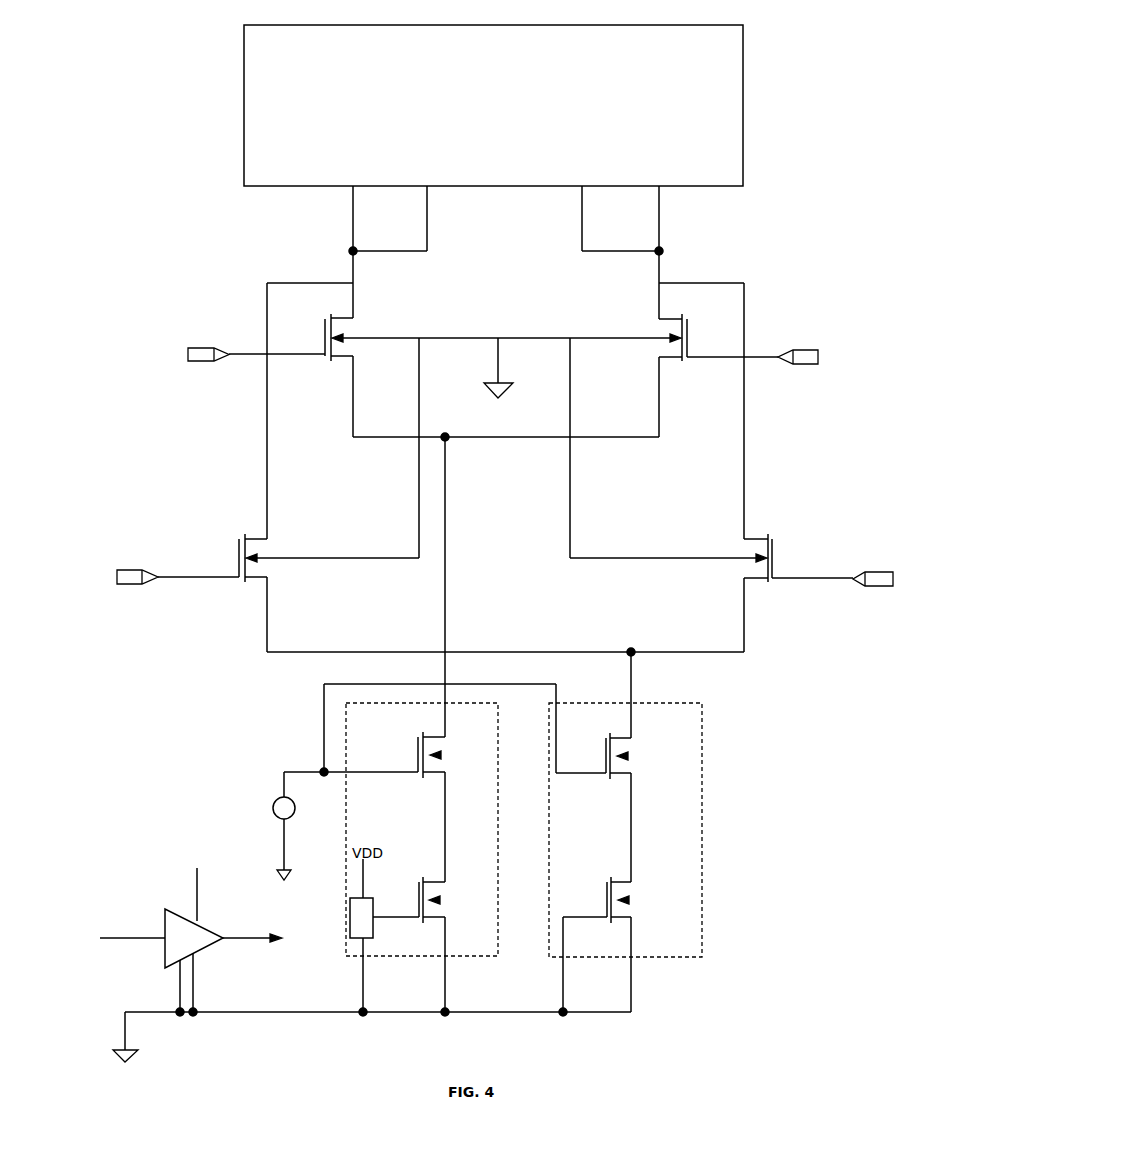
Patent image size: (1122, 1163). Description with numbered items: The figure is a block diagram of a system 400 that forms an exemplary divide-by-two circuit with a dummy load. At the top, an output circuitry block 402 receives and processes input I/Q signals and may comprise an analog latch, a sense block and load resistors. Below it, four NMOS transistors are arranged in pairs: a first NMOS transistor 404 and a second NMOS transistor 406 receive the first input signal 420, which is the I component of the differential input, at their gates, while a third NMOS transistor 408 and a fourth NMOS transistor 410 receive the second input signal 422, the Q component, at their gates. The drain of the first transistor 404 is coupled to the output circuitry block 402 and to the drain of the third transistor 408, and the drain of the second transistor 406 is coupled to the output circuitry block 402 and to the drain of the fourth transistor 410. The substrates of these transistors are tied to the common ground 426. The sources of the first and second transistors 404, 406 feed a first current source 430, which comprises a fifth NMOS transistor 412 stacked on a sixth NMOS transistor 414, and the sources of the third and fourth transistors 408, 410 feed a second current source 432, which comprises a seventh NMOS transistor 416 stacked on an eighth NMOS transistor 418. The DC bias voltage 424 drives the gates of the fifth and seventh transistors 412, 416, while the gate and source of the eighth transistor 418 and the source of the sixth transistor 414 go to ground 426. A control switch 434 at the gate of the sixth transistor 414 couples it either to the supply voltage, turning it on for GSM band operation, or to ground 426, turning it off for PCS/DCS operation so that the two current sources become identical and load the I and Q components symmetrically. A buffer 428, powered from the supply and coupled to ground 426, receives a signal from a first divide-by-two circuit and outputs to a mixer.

The system 400 is at (152, 116).
The output circuitry block 402 is at (744, 118).
The NMOS transistor M1 404 is at (322, 328).
The NMOS transistor M2 406 is at (690, 329).
The NMOS transistor M3 408 is at (236, 550).
The NMOS transistor M4 410 is at (775, 545).
The NMOS transistor M5 412 is at (416, 748).
The NMOS transistor M6 414 is at (416, 890).
The NMOS transistor M7 416 is at (603, 748).
The NMOS transistor M8 418 is at (603, 890).
The input signal Input_1 420 is at (194, 346).
The input signal Input_2 422 is at (145, 569).
The DC bias voltage VDCbias 424 is at (282, 793).
The ground GND 426 is at (495, 390).
The buffer 428 is at (168, 906).
The current source I1 430 is at (346, 750).
The current source I2 432 is at (702, 755).
The control switch 434 is at (352, 937).